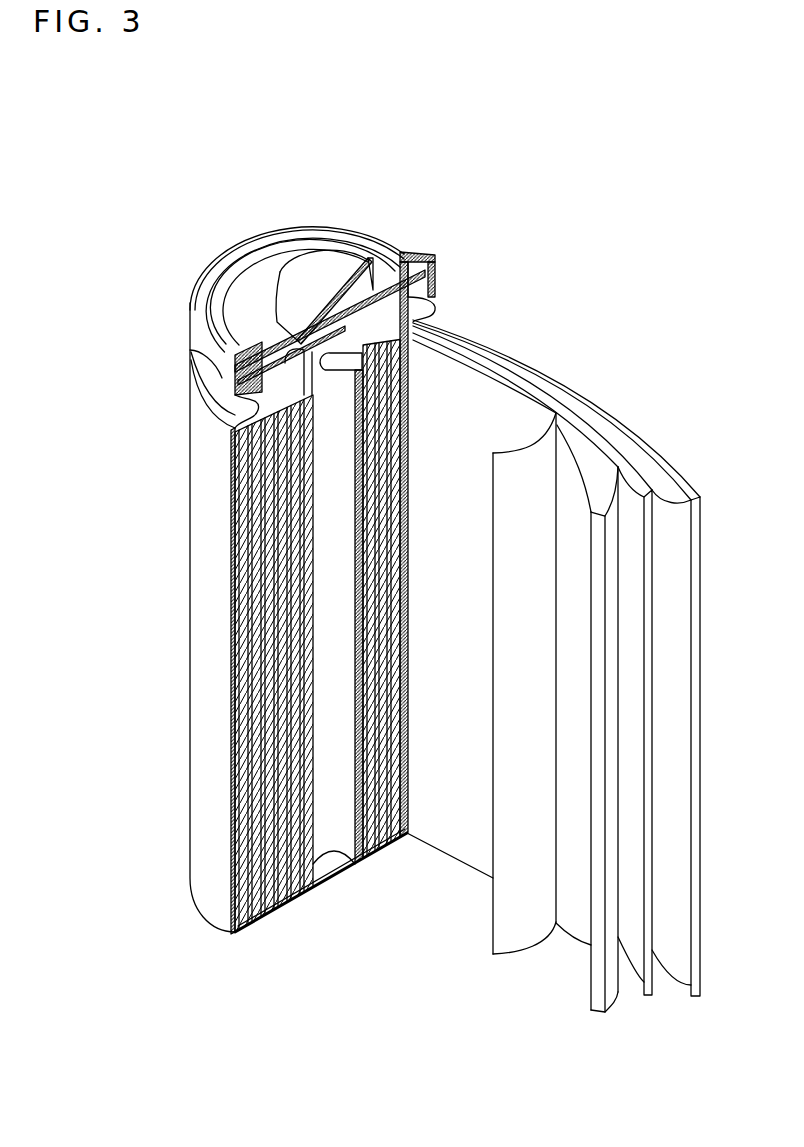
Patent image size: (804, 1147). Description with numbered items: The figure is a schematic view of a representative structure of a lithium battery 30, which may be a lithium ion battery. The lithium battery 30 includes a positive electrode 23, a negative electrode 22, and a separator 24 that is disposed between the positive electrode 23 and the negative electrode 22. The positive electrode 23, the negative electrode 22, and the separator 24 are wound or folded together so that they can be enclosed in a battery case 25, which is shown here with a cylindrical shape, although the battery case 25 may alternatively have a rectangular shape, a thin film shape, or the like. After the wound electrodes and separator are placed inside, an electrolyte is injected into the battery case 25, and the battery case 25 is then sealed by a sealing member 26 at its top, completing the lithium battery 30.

The negative electrode 22 is at (683, 476).
The positive electrode 23 is at (607, 462).
The separator 24 is at (548, 434).
The battery case 25 is at (197, 624).
The sealing member 26 is at (306, 270).
The lithium battery 30 is at (355, 172).